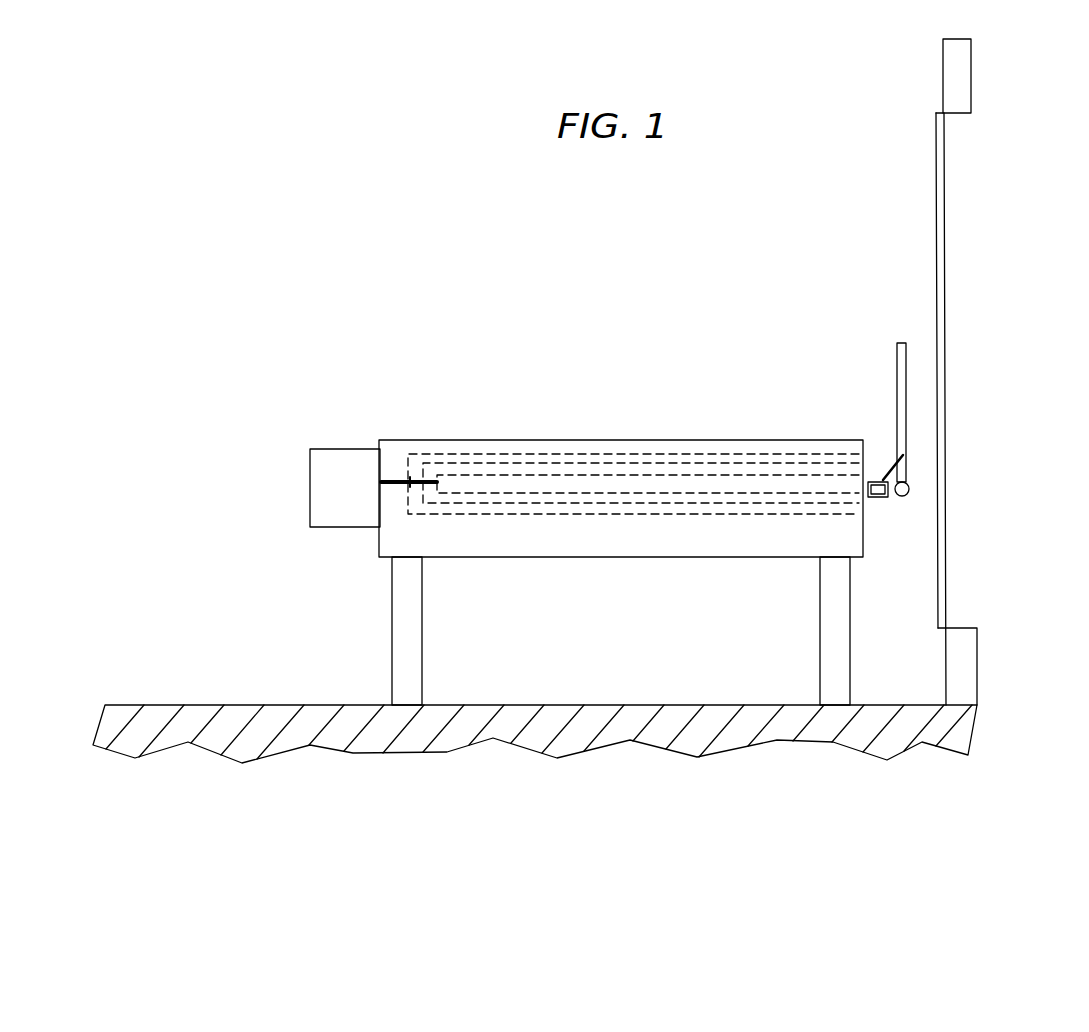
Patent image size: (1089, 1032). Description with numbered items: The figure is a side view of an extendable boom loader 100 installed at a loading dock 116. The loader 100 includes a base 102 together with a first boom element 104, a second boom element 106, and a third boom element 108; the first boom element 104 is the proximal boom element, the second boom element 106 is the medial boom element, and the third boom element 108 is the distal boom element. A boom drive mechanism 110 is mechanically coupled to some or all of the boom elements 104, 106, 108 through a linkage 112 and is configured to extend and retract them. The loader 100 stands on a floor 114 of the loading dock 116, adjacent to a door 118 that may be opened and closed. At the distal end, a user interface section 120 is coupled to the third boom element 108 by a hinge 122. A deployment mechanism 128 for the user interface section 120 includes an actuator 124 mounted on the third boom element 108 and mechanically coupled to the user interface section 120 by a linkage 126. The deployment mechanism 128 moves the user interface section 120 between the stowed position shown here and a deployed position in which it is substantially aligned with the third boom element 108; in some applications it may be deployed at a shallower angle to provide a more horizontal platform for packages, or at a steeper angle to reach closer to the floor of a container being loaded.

The extendable boom loader 100 is at (522, 320).
The base 102 is at (398, 439).
The first boom element 104 is at (457, 452).
The second boom element 106 is at (507, 462).
The third boom element 108 is at (552, 474).
The boom drive mechanism 110 is at (360, 503).
The linkage 112 is at (397, 482).
The floor 114 is at (288, 705).
The loading dock 116 is at (990, 228).
The door 118 is at (946, 378).
The user interface section 120 is at (897, 365).
The hinge 122 is at (909, 489).
The actuator 124 is at (883, 498).
The linkage 126 is at (883, 480).
The deployment mechanism 128 is at (880, 508).